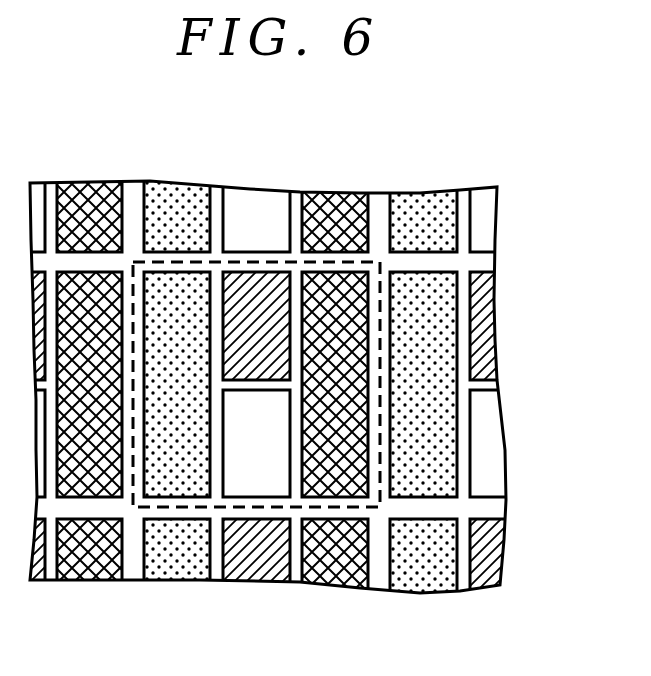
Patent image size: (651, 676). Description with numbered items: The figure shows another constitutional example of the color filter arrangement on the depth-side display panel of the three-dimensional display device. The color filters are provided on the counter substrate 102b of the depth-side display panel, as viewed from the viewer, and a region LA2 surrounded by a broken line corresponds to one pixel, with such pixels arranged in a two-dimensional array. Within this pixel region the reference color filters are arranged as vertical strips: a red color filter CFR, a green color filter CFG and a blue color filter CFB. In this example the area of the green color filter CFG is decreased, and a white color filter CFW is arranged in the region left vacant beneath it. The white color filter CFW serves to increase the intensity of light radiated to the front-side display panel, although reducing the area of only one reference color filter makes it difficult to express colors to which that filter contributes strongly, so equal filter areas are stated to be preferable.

The red color filter CFR is at (177, 307).
The green color filter CFG is at (258, 317).
The blue color filter CFB is at (333, 313).
The white color filter CFW is at (260, 467).
The region surrounded by broken line LA2 is at (373, 262).
The counter substrate 102b is at (474, 222).